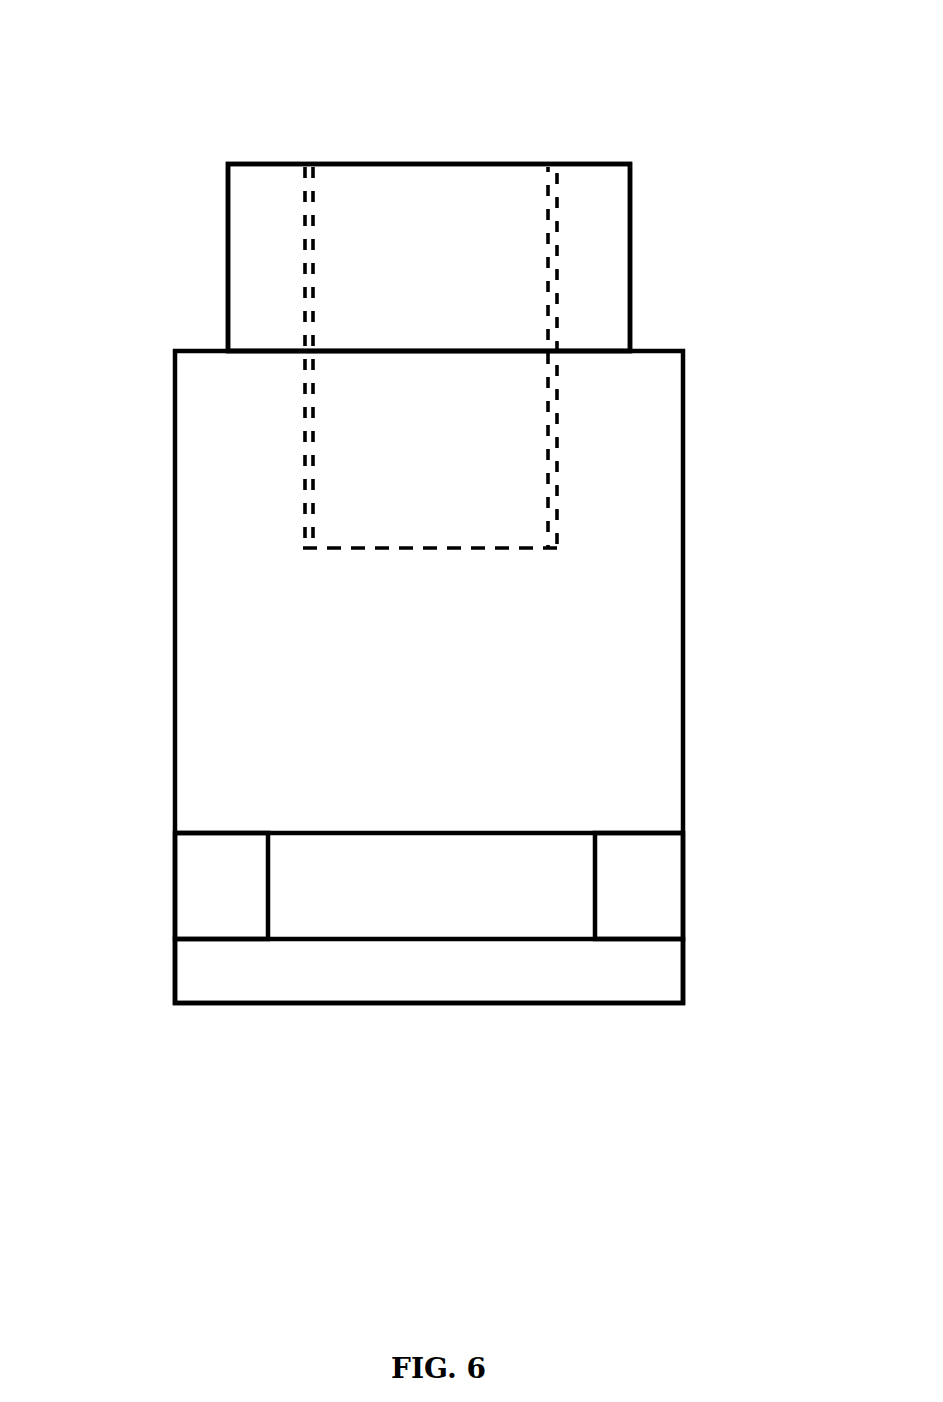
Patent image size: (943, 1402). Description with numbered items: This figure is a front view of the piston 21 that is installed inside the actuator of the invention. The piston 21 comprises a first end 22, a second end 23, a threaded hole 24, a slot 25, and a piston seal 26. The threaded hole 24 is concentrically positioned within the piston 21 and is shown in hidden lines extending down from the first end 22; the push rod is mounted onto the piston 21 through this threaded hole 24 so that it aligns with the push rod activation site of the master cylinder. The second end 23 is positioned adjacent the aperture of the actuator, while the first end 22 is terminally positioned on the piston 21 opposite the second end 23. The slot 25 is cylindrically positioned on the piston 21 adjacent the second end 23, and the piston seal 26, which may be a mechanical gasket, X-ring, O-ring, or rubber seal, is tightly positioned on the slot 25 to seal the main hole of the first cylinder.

The piston 21 is at (583, 218).
The first end 22 is at (268, 163).
The second end 23 is at (473, 1005).
The threaded hole 24 is at (540, 233).
The slot 25 is at (203, 877).
The piston seal 26 is at (670, 892).